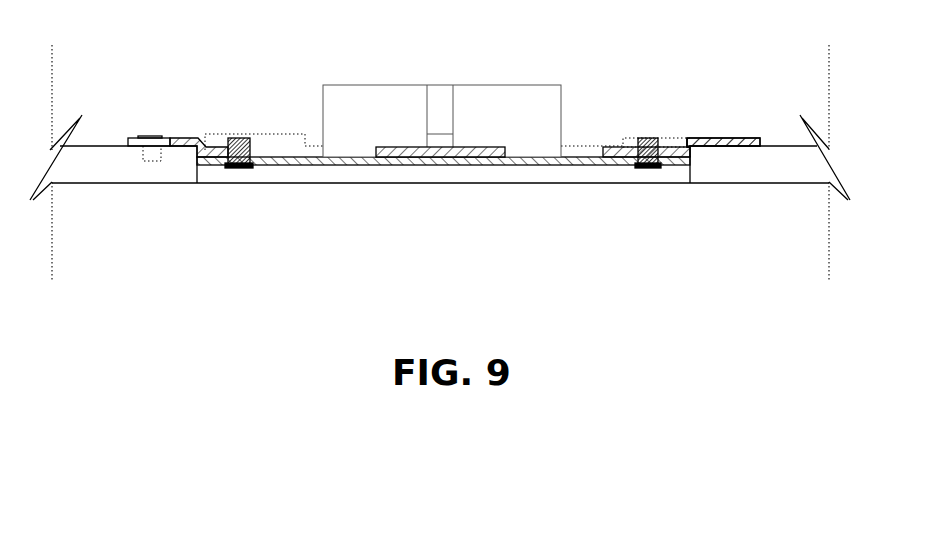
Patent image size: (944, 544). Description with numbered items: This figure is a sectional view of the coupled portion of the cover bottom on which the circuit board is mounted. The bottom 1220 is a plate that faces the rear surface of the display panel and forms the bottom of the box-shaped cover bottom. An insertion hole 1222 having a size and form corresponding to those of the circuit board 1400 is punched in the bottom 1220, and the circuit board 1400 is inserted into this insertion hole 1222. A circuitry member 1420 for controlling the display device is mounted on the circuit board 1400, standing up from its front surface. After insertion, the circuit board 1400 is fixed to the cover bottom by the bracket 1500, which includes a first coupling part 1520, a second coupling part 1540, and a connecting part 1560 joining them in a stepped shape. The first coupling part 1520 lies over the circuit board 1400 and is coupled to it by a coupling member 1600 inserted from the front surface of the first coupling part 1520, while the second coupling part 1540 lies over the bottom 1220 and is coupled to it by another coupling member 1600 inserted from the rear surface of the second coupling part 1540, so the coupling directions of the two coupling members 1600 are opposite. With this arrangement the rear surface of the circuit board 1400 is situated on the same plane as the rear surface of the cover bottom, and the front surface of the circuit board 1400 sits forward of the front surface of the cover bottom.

The bottom 1220 is at (153, 170).
The insertion hole 1222 is at (213, 170).
The circuit board 1400 is at (435, 160).
The circuitry member 1420 is at (492, 147).
The bracket 1500 is at (763, 121).
The first coupling part 1520 is at (608, 165).
The second coupling part 1540 is at (690, 138).
The connecting part 1560 is at (692, 152).
The coupling member 1600 is at (147, 137).